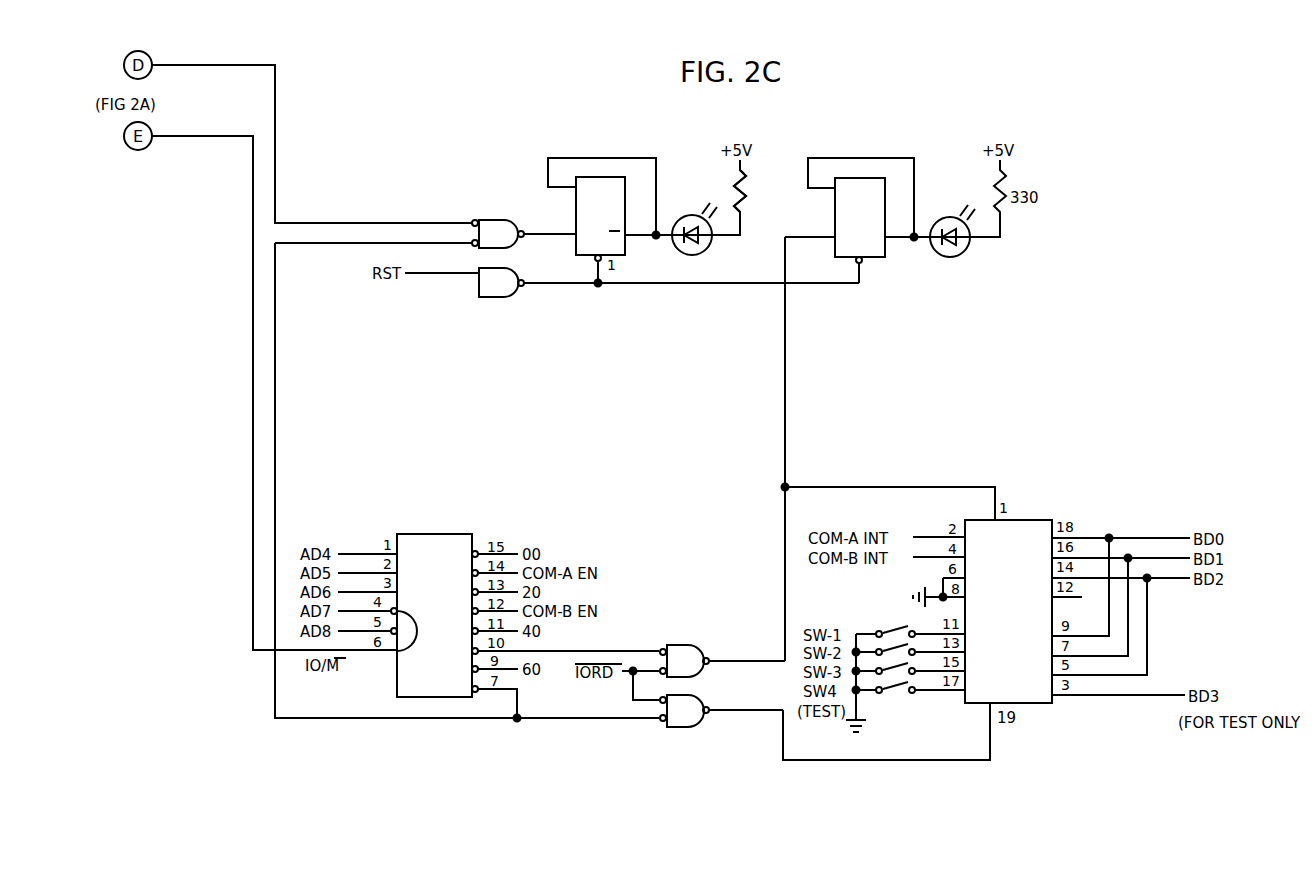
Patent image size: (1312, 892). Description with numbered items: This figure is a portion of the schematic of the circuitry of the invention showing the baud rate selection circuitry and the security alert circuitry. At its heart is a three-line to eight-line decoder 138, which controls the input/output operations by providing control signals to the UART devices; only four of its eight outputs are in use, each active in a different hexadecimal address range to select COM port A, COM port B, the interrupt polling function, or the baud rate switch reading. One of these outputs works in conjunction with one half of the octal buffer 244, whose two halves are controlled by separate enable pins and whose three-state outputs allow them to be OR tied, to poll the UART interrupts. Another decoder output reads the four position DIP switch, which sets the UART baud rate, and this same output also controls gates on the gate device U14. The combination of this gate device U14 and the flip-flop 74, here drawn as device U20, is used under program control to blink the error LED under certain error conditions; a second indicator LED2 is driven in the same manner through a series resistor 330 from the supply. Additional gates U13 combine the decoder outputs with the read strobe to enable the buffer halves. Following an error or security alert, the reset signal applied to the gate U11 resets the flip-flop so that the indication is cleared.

The gate device U14 is at (499, 227).
The gate U11 is at (501, 275).
The 74S74 flip-flop U20 is at (576, 190).
The 74 LS 74 flip-flop 74 is at (861, 219).
The error LED is at (694, 241).
The light emitting diode LED2 is at (952, 243).
The 330 ohm resistor 330 is at (756, 191).
The 74 LS 244 Octal Buffer 244 is at (1008, 611).
The 3-line to 8-line decoder 138 is at (434, 615).
The NAND gates U13 is at (685, 679).